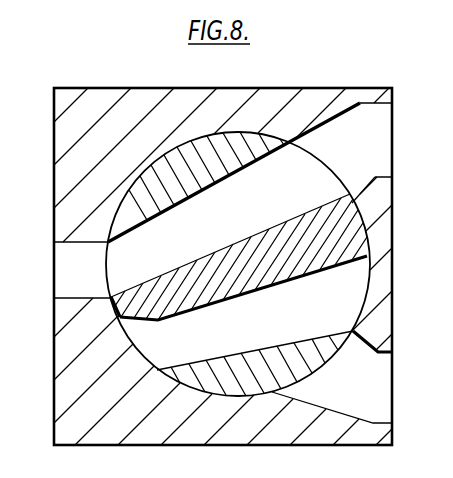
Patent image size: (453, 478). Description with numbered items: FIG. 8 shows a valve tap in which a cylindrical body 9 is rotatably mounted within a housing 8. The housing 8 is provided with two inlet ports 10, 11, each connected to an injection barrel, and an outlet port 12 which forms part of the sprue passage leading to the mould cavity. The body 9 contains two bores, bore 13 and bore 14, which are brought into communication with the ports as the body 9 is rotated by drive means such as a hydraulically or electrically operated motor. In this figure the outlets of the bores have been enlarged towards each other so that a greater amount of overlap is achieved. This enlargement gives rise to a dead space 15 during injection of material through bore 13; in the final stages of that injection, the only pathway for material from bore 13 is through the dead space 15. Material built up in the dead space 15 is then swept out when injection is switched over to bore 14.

The housing 8 is at (247, 108).
The cylindrical body 9 is at (197, 157).
The inlet port 10 is at (353, 150).
The inlet port 11 is at (363, 378).
The outlet port 12 is at (83, 276).
The bore 13 is at (229, 226).
The bore 14 is at (254, 331).
The dead space 15 is at (107, 299).